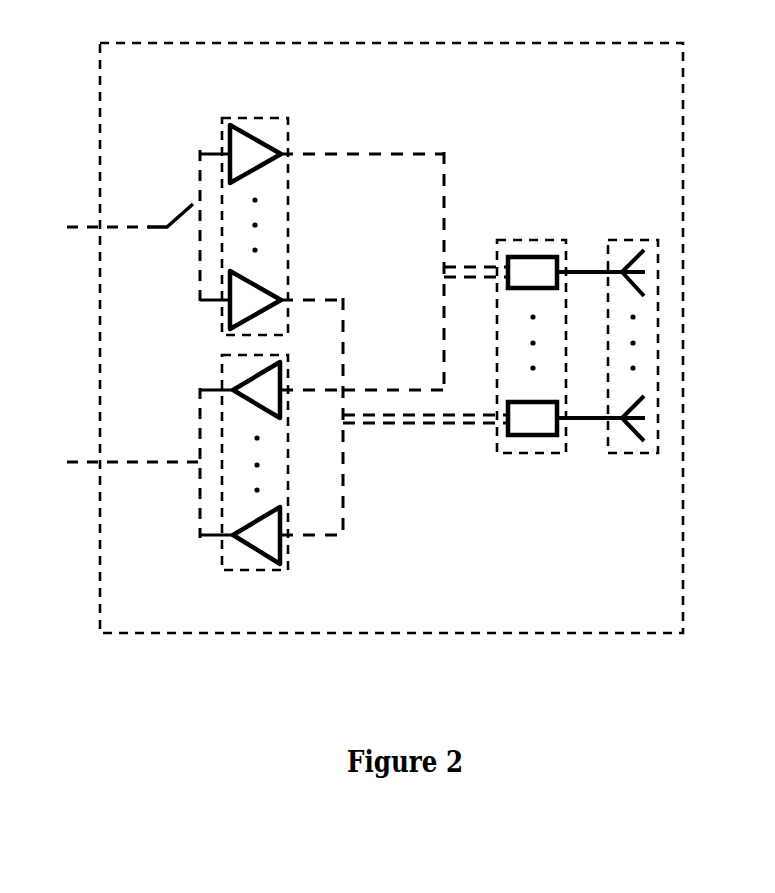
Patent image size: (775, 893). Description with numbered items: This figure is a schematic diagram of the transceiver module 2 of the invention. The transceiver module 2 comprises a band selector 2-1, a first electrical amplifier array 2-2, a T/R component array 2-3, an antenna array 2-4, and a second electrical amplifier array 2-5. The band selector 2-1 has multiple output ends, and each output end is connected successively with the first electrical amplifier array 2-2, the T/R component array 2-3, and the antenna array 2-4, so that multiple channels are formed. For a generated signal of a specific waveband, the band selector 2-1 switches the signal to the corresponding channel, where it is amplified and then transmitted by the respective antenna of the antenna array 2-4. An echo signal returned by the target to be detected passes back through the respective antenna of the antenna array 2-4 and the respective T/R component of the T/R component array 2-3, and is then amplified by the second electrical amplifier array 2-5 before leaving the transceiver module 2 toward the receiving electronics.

The transceiver module 2 is at (684, 340).
The band selector 2-1 is at (175, 205).
The first electrical amplifier array 2-2 is at (259, 118).
The T/R component array 2-3 is at (541, 240).
The antenna array 2-4 is at (637, 240).
The second electrical amplifier array 2-5 is at (254, 573).